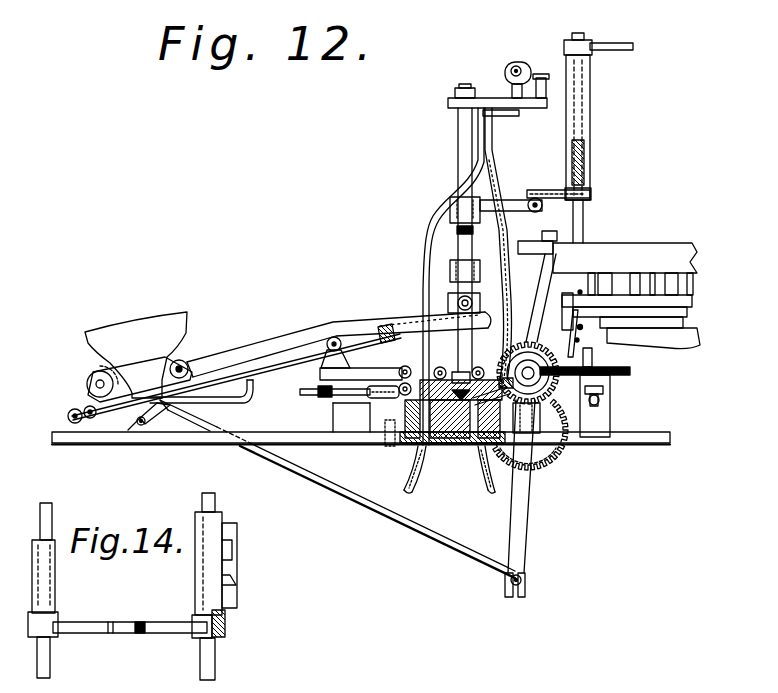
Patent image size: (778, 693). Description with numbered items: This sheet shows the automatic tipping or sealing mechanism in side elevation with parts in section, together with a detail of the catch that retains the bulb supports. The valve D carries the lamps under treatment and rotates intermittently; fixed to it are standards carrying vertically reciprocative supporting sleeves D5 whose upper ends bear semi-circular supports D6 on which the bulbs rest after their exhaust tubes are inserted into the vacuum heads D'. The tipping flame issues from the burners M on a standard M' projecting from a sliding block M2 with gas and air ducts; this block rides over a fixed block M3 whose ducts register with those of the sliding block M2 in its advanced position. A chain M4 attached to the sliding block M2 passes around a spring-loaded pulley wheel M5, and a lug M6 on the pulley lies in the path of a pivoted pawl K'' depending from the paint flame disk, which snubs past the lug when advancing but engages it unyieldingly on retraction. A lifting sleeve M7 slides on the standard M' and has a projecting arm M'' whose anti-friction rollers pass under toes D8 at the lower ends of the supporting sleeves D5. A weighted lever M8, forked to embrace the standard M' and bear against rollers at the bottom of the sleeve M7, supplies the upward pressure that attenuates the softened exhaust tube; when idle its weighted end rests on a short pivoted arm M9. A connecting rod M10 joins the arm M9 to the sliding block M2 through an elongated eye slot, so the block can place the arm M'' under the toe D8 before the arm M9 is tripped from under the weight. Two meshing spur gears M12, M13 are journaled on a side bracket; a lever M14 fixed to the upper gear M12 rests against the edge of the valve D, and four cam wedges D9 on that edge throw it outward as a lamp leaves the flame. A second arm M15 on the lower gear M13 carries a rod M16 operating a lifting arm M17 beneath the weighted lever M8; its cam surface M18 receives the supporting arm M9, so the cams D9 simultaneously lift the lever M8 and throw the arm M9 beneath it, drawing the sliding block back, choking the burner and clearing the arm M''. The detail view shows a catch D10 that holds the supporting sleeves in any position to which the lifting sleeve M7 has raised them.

In FIG. 12, the burners M is at (498, 75).
In FIG. 12, the standard M' is at (450, 254).
In FIG. 12, the projecting arm M'' is at (506, 248).
In FIG. 12, the sliding block M2 is at (431, 364).
In FIG. 12, the fixed block M3 is at (458, 442).
In FIG. 12, the chain M4 is at (545, 380).
In FIG. 12, the pulley wheel M5 is at (628, 374).
In FIG. 12, the lug M6 is at (606, 354).
In FIG. 12, the lifting sleeve M7 is at (455, 233).
In FIG. 12, the weighted lever M8 is at (352, 342).
In FIG. 12, the short arm M9 is at (121, 402).
In FIG. 12, the connecting rod M10 is at (263, 396).
In FIG. 12, the upper spur gear M12 is at (508, 335).
In FIG. 12, the lower spur gear M13 is at (541, 458).
In FIG. 12, the lever M14 is at (545, 284).
In FIG. 12, the second arm M15 is at (545, 515).
In FIG. 12, the rod M16 is at (353, 476).
In FIG. 12, the lifting arm M17 is at (212, 393).
In FIG. 12, the cam surface M18 is at (155, 405).
In FIG. 12, the valve D is at (626, 296).
In FIG. 14, the vacuum head D' is at (125, 586).
In FIG. 12, the supporting sleeve D5 is at (591, 111).
In FIG. 12, the semi-circular support D6 is at (634, 42).
In FIG. 12, the toe D8 is at (540, 190).
In FIG. 14, the toe D8 is at (137, 634).
In FIG. 12, the cam wedge D9 is at (523, 252).
In FIG. 14, the catch D10 is at (233, 587).
In FIG. 12, the pivoted pawl K'' is at (583, 333).